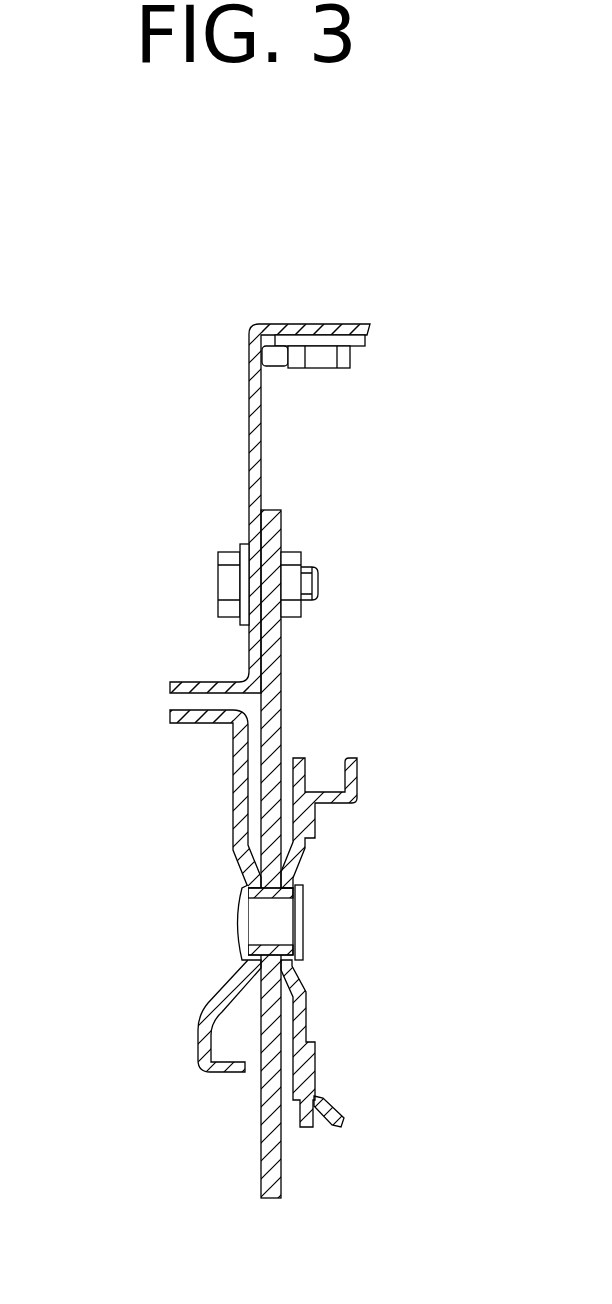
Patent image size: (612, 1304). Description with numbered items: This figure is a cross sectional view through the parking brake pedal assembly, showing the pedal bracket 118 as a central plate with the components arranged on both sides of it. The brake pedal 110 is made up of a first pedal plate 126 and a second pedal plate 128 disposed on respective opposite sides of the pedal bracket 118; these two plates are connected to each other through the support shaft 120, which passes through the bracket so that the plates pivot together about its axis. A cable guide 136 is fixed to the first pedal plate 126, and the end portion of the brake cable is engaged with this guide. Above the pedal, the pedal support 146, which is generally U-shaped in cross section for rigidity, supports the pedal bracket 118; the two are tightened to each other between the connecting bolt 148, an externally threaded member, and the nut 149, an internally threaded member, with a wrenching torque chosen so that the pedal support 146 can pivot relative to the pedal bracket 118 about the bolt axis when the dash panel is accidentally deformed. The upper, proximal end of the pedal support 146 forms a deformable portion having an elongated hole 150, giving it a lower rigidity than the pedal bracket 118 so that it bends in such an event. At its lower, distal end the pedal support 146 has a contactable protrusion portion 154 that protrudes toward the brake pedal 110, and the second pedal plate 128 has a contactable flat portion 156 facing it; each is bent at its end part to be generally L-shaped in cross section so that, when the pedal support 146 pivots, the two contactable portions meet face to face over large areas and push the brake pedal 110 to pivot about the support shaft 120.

The brake pedal 110 is at (422, 747).
The pedal bracket 118 is at (268, 1163).
The support shaft 120 is at (262, 908).
The first pedal plate 126 is at (298, 1003).
The second pedal plate 128 is at (233, 790).
The cable guide 136 is at (336, 1100).
The pedal support 146 is at (249, 478).
The connecting bolt 148 is at (226, 578).
The nut 149 is at (290, 557).
The elongated hole 150 is at (249, 382).
The contactable protrusion portion 154 is at (195, 681).
The contactable flat portion 156 is at (185, 710).